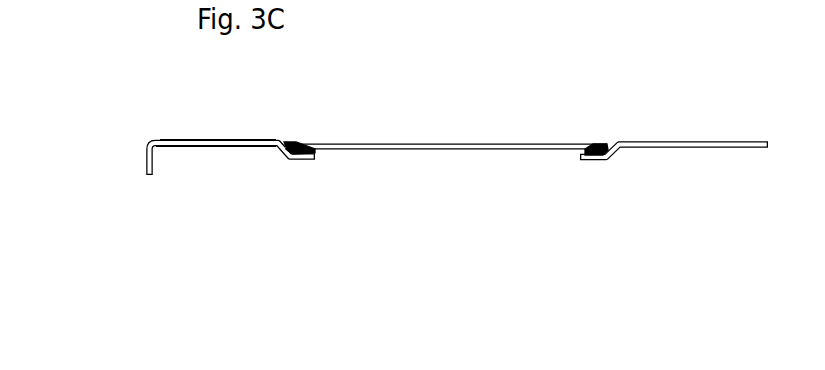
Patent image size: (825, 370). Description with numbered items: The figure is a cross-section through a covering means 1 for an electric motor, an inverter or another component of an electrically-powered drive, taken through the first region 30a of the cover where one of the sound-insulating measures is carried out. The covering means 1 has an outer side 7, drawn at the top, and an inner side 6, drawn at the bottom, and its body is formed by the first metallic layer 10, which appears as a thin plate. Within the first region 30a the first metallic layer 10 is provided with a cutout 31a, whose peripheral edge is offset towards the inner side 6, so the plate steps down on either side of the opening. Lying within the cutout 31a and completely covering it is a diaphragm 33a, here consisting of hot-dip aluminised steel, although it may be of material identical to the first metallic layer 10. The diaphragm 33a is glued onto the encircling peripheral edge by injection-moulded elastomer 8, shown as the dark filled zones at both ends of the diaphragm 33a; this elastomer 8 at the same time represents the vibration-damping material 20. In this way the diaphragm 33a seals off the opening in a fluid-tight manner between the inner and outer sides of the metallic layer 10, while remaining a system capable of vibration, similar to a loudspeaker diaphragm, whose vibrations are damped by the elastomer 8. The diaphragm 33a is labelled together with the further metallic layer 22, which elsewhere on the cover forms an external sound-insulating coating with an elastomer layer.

The covering means 1 is at (215, 145).
The inner side 6 is at (210, 146).
The outer side 7 is at (230, 140).
The injection-moulded elastomer 8 is at (617, 102).
The vibration-damping material 20 is at (600, 144).
The first metallic layer 10 is at (660, 141).
The further metallic layer 22 is at (446, 115).
The diaphragm 33a is at (446, 115).
The cutout 31a is at (437, 144).
The first region 30a is at (385, 181).